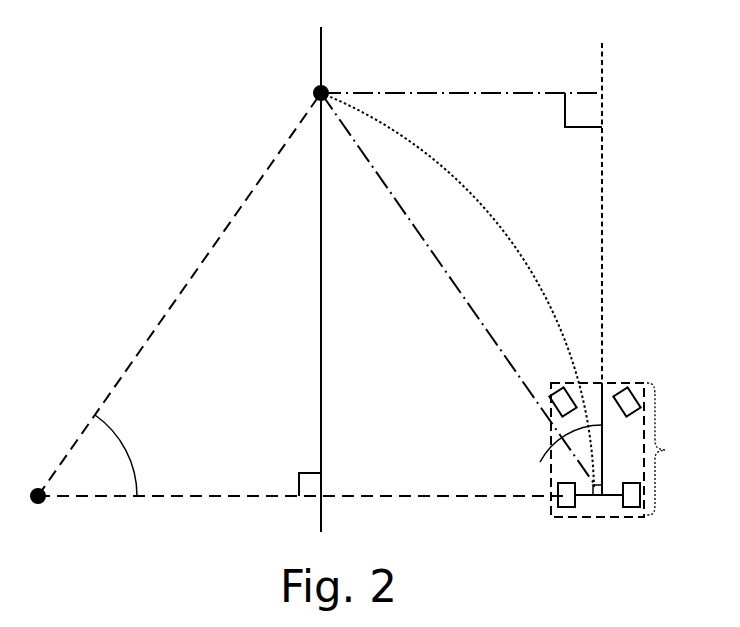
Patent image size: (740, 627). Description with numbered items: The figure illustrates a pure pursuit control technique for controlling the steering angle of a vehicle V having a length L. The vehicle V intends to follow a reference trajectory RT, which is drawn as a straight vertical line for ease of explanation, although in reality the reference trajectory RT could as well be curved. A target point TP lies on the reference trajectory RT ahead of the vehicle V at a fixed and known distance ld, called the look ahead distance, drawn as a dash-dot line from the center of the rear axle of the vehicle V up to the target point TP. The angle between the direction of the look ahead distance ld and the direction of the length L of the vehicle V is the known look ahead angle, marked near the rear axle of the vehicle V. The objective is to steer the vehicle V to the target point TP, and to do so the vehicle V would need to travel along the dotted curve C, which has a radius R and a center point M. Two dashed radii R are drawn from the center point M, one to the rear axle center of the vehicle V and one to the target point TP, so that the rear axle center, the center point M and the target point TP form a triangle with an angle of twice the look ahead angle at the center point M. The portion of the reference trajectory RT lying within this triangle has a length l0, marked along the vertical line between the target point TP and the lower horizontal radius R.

The reference trajectory RT is at (321, 45).
The target point TP is at (313, 90).
The center point M is at (25, 495).
The radius R is at (302, 311).
The length of the portion of the reference trajectory within the triangle l0 is at (338, 294).
The look ahead distance ld is at (461, 289).
The curve C is at (522, 250).
The vehicle V is at (625, 375).
The length of the vehicle L is at (665, 449).